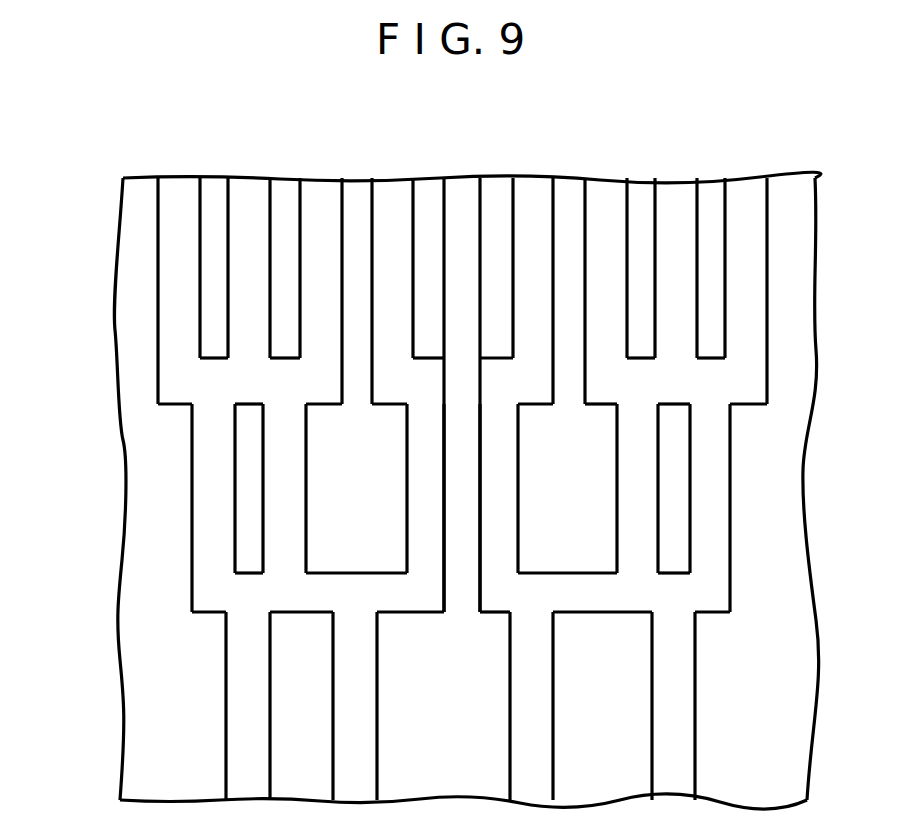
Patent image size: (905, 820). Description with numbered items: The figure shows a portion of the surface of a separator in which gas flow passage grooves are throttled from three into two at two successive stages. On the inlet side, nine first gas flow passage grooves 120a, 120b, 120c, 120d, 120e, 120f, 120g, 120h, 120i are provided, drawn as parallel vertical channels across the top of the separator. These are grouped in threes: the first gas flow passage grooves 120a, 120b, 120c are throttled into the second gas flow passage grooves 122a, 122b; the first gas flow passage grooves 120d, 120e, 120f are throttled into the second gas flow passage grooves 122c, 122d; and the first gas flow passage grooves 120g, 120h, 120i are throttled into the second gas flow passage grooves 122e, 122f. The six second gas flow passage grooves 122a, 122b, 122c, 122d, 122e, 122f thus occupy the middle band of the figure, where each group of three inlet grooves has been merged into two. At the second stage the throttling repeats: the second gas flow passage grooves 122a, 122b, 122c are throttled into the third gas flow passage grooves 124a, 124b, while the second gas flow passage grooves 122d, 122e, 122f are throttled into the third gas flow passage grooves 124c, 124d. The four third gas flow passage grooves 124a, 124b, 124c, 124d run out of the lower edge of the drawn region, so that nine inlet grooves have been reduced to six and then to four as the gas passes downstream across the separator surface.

The first gas flow passage groove 120a is at (760, 143).
The first gas flow passage groove 120b is at (685, 108).
The first gas flow passage groove 120c is at (620, 143).
The first gas flow passage groove 120d is at (543, 108).
The first gas flow passage groove 120e is at (482, 143).
The first gas flow passage groove 120f is at (407, 108).
The first gas flow passage groove 120g is at (338, 143).
The first gas flow passage groove 120h is at (255, 108).
The first gas flow passage groove 120i is at (190, 143).
The second gas flow passage groove 122a is at (717, 452).
The second gas flow passage groove 122b is at (583, 560).
The second gas flow passage groove 122c is at (583, 460).
The second gas flow passage groove 122d is at (371, 560).
The second gas flow passage groove 122e is at (372, 460).
The second gas flow passage groove 122f is at (68, 558).
The third gas flow passage groove 124a is at (763, 743).
The third gas flow passage groove 124b is at (620, 740).
The third gas flow passage groove 124c is at (362, 730).
The third gas flow passage groove 124d is at (180, 740).